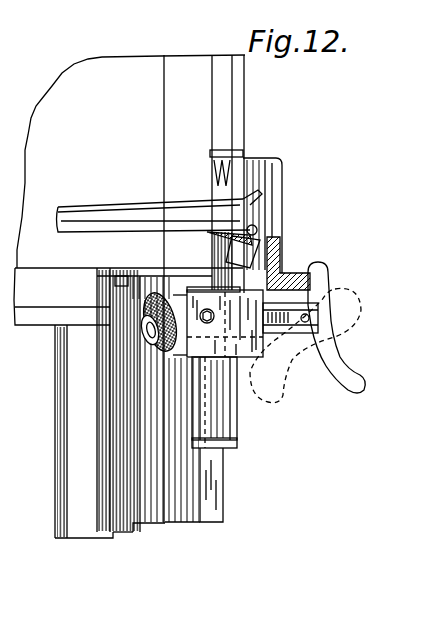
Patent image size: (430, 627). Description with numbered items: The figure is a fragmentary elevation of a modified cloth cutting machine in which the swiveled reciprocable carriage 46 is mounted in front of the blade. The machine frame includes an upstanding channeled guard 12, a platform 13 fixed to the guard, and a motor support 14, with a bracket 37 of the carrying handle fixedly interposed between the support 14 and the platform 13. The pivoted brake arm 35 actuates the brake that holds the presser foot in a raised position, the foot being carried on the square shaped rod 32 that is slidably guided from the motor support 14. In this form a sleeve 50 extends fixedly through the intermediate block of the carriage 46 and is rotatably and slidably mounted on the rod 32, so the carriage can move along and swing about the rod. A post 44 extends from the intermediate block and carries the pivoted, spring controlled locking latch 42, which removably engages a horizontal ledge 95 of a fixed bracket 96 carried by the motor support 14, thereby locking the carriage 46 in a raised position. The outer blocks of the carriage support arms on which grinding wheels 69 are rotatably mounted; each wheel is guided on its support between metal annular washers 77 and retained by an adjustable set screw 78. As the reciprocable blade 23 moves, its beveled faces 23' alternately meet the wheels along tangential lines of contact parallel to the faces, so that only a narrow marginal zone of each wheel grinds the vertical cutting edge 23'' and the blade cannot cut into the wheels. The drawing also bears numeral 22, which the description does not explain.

The motor support 14 is at (130, 289).
The brake arm 35 is at (108, 207).
The bracket 37 is at (57, 256).
The platform 13 is at (48, 317).
The channeled guard 12 is at (66, 391).
The reciprocable blade 23 is at (116, 400).
The bar 22 is at (123, 531).
The beveled face 23' is at (177, 440).
The vertical cutting edge 23'' is at (187, 533).
The grinding wheel 69 is at (142, 313).
The metal annular washers 77 is at (146, 326).
The adjustable set screw 78 is at (145, 341).
The fixed bracket 96 is at (283, 213).
The horizontal ledge 95 is at (296, 262).
The locking latch 42 is at (322, 296).
The post 44 is at (281, 334).
The carriage 46 is at (249, 364).
The sleeve 50 is at (236, 432).
The square shaped rod 32 is at (212, 492).